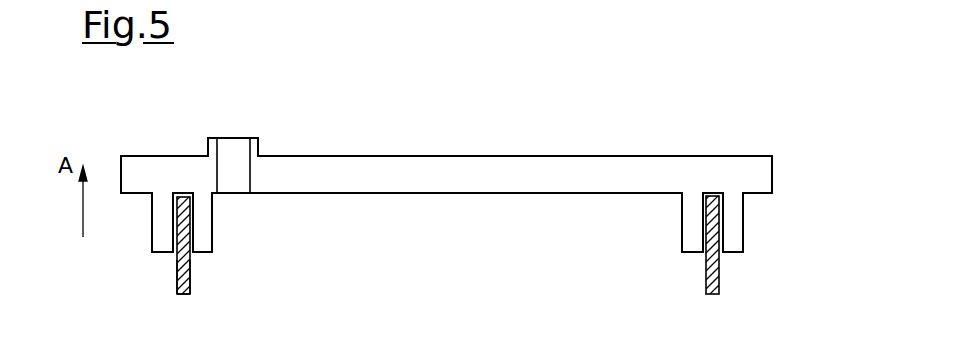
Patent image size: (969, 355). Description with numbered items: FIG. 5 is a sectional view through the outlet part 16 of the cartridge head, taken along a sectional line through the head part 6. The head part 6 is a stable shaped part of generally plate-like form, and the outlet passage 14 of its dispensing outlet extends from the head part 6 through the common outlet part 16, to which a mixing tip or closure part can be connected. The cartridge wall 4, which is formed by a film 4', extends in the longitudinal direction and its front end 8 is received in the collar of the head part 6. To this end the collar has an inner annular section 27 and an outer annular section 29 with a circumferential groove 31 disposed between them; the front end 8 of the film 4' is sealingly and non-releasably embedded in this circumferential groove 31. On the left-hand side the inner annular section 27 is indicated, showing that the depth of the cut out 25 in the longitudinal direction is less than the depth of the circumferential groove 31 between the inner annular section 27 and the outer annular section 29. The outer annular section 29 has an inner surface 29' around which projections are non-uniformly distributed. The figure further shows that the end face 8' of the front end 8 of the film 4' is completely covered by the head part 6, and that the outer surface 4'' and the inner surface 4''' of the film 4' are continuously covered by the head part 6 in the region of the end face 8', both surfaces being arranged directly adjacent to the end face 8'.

The cartridge wall 4 is at (472, 258).
The film 4' is at (181, 322).
The outer surface 4'' is at (139, 277).
The inner surface 4''' is at (244, 289).
The head part 6 is at (740, 175).
The front end 8 is at (774, 260).
The end face 8' is at (461, 148).
The outlet passage 14 is at (218, 160).
The outlet part 16 is at (562, 170).
The cut out 25 is at (200, 237).
The inner annular section 27 is at (193, 220).
The outer annular section 29 is at (783, 222).
The inner surface 29' is at (786, 181).
The circumferential groove 31 is at (705, 252).